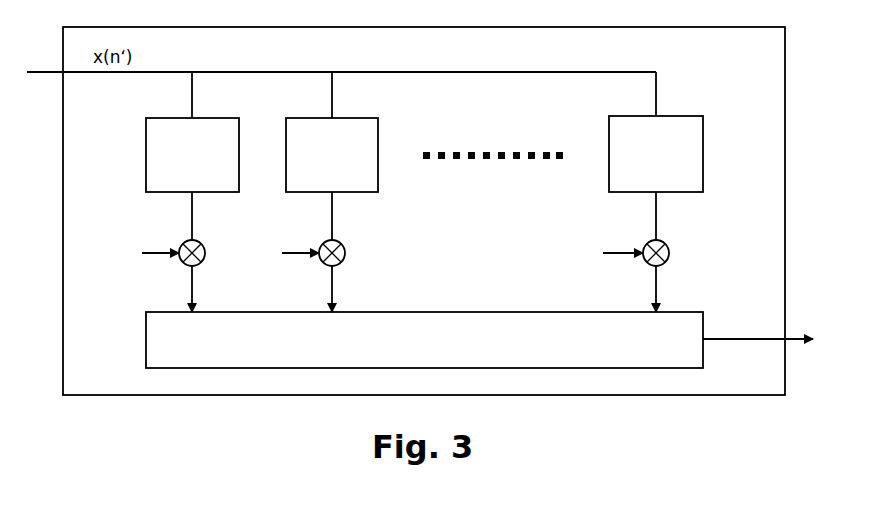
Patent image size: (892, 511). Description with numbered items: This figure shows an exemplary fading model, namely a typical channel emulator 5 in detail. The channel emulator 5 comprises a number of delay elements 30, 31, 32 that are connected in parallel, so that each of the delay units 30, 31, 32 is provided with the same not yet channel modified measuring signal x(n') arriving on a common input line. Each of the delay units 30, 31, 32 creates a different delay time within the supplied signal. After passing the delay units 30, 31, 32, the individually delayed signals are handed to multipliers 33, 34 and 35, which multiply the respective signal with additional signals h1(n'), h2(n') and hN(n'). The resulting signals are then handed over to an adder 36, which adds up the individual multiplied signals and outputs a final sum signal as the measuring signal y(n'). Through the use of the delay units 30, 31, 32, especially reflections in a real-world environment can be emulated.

The channel emulator 5 is at (115, 397).
The delay element 30 is at (240, 135).
The delay element 31 is at (379, 135).
The delay element 32 is at (704, 134).
The multiplier 33 is at (199, 238).
The multiplier 34 is at (339, 238).
The multiplier 35 is at (663, 238).
The adder 36 is at (258, 368).